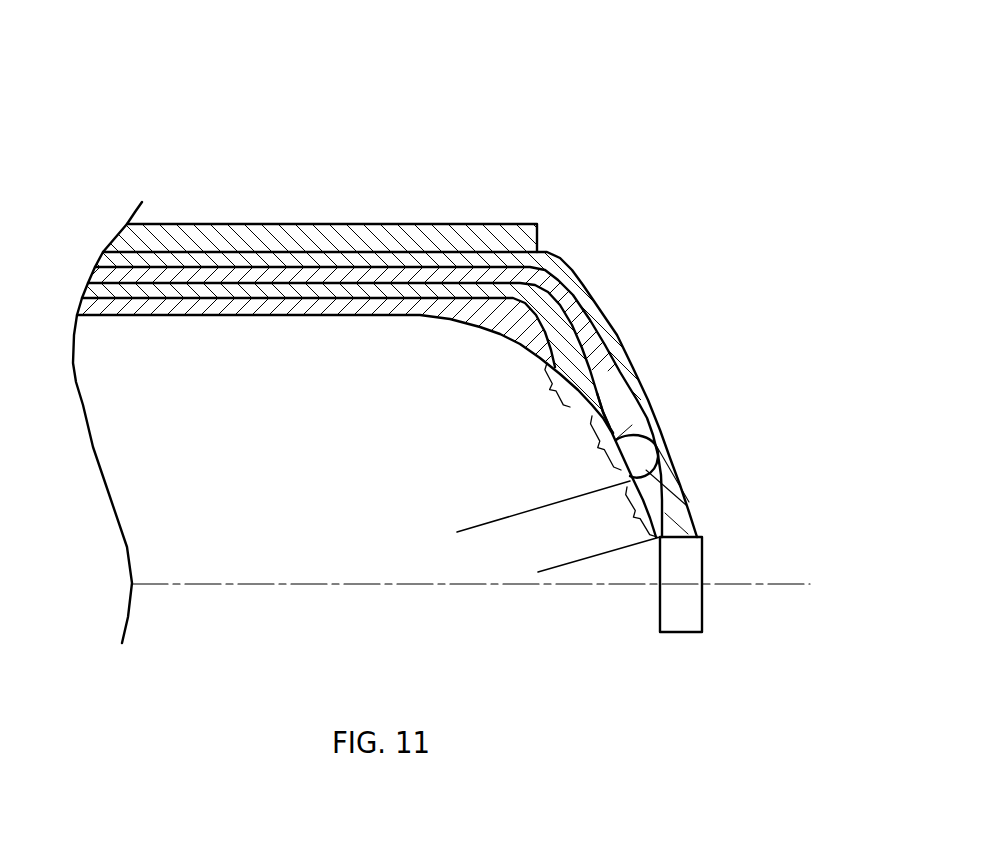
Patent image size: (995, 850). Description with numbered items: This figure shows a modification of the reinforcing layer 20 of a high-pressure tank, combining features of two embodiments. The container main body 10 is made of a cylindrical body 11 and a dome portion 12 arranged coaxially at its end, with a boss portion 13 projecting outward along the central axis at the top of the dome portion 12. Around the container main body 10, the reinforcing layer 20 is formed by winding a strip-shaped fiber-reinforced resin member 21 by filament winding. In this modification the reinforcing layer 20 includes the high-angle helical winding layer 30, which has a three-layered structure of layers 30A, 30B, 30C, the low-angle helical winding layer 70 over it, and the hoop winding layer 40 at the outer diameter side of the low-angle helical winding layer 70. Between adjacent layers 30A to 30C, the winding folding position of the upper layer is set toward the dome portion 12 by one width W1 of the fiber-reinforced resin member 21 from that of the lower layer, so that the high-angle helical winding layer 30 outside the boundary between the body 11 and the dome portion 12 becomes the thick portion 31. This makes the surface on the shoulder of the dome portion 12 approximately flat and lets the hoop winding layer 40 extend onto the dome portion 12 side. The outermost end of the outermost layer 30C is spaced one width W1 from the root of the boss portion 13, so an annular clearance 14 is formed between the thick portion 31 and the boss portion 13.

The container main body 10 is at (471, 546).
The body 11 is at (275, 315).
The dome portion 12 is at (641, 433).
The boss portion 13 is at (702, 611).
The annular clearance 14 is at (673, 501).
The reinforcing layer 20 is at (450, 359).
The fiber-reinforced resin member 21 is at (575, 563).
The high-angle helical winding layer 30 is at (415, 314).
The layer 30A is at (562, 290).
The layer 30B is at (577, 320).
The outermost layer 30C is at (594, 340).
The thick portion 31 is at (637, 407).
The hoop winding layer 40 is at (544, 213).
The low-angle helical winding layer 70 is at (649, 366).
The width of the fiber-reinforced resin member W1 is at (597, 450).